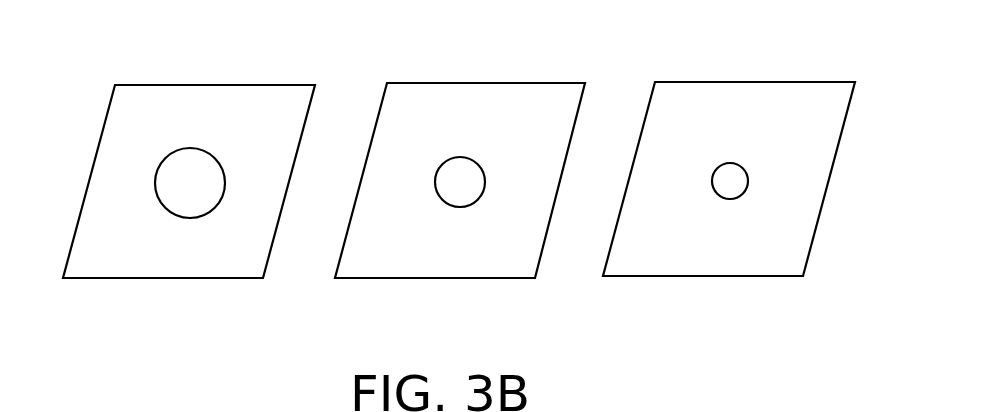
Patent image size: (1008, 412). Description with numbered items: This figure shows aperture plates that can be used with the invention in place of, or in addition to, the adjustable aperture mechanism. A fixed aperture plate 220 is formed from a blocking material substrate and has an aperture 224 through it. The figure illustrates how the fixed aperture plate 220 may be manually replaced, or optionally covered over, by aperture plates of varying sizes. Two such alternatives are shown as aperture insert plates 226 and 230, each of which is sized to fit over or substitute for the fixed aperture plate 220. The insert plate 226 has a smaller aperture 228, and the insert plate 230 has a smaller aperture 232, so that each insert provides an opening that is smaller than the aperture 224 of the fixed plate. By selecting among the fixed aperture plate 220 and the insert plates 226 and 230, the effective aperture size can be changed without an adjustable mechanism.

The fixed aperture plate 220 is at (220, 74).
The aperture 224 is at (202, 148).
The aperture insert plate 226 is at (490, 74).
The smaller aperture 228 is at (472, 157).
The aperture insert plate 230 is at (758, 72).
The smaller aperture 232 is at (732, 162).